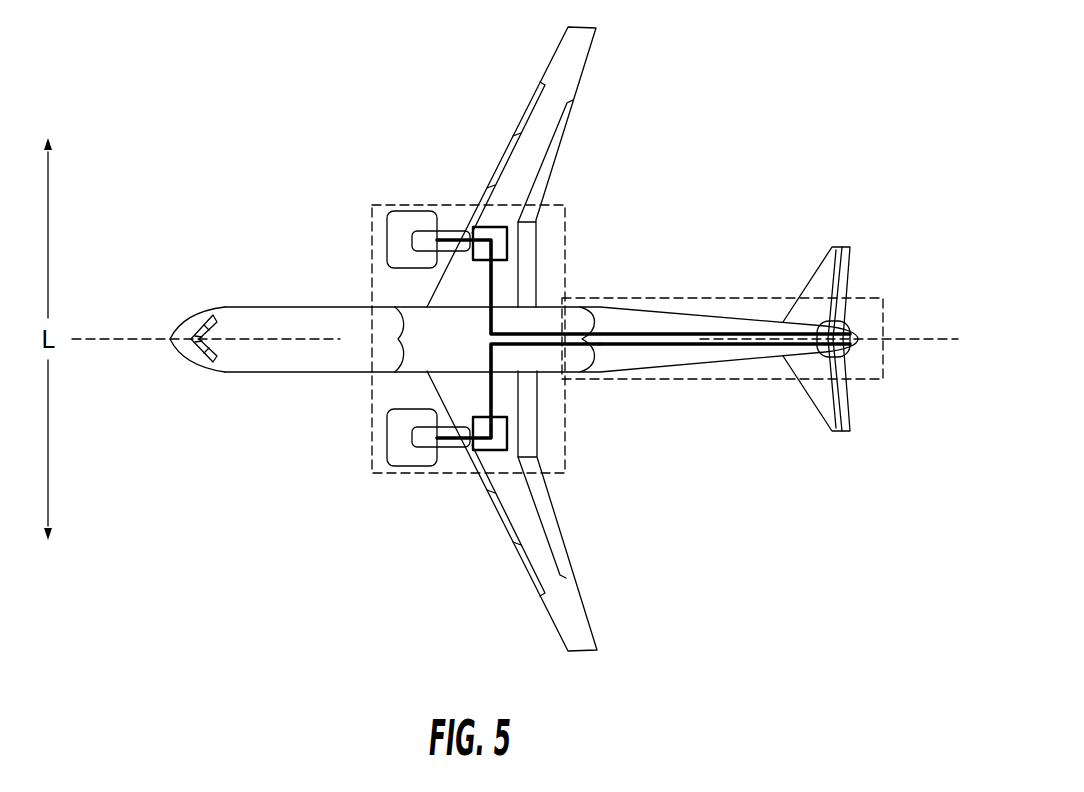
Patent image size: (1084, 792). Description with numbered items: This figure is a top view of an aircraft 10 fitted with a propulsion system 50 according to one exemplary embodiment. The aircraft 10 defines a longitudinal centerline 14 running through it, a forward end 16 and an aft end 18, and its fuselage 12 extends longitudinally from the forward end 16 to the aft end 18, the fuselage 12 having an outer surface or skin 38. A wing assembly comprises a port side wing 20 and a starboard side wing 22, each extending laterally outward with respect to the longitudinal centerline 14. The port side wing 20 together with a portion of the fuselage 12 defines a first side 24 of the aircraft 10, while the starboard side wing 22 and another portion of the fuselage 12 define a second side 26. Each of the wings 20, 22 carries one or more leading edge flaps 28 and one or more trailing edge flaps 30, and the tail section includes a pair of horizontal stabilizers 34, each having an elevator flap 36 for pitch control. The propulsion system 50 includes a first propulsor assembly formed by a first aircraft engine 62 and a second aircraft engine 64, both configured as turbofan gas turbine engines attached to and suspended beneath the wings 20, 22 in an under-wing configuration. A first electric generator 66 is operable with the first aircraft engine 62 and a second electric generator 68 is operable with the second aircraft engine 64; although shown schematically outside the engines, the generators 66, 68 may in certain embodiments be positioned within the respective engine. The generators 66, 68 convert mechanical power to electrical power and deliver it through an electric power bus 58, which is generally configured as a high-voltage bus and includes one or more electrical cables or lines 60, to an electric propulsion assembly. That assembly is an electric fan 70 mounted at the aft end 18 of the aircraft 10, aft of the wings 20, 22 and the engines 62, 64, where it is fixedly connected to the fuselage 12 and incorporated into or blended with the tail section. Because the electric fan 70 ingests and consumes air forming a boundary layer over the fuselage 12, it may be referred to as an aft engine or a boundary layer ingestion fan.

The aircraft 10 is at (518, 339).
The fuselage 12 is at (225, 358).
The longitudinal centerline 14 is at (945, 360).
The forward end 16 is at (169, 360).
The aft end 18 is at (805, 434).
The port side wing 20 is at (542, 558).
The starboard side wing 22 is at (578, 48).
The first side of the aircraft 24 is at (297, 391).
The second side of the aircraft 26 is at (305, 300).
The leading edge flaps 28 is at (505, 520).
The trailing edge flaps 30 is at (560, 524).
The horizontal stabilizers 34 is at (826, 268).
The elevator flap 36 is at (843, 268).
The outer surface or skin 38 is at (664, 362).
The propulsion system 50 is at (630, 298).
The electric power bus 58 is at (550, 362).
The electrical cables or lines 60 is at (703, 333).
The first aircraft engine 62 is at (393, 462).
The second aircraft engine 64 is at (402, 210).
The first electric generator 66 is at (473, 447).
The second electric generator 68 is at (501, 246).
The electric fan 70 is at (849, 312).